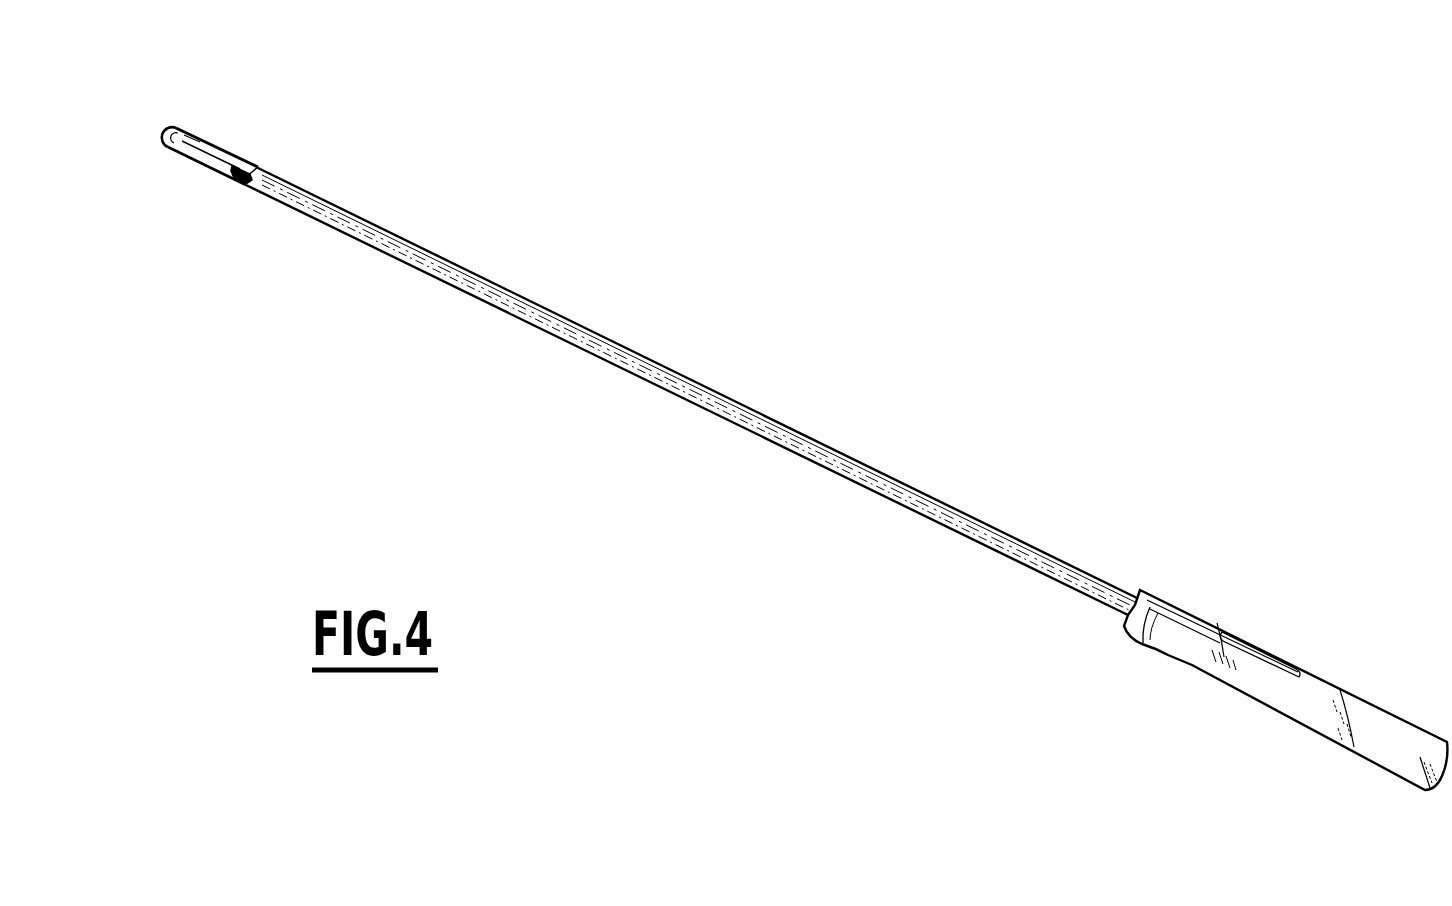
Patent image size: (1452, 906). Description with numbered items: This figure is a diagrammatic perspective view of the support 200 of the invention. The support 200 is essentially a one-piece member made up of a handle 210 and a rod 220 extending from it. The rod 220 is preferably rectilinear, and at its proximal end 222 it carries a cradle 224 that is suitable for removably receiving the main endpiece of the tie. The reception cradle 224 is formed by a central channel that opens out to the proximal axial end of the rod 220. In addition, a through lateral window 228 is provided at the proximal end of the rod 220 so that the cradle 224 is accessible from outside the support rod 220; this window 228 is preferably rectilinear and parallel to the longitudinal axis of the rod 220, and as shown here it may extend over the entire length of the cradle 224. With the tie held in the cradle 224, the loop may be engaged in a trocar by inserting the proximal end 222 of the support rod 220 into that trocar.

The support 200 is at (533, 275).
The handle 210 is at (1256, 622).
The rod 220 is at (783, 450).
The proximal end 222 is at (272, 158).
The cradle 224 is at (160, 129).
The through lateral window 228 is at (238, 174).